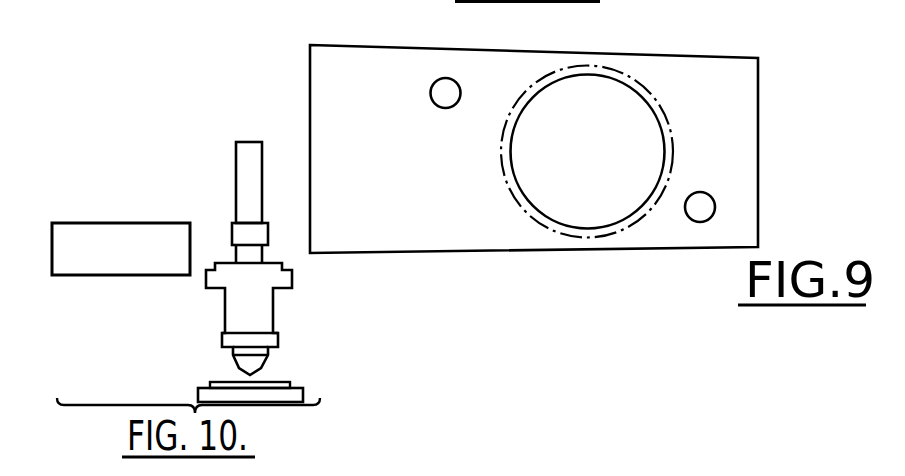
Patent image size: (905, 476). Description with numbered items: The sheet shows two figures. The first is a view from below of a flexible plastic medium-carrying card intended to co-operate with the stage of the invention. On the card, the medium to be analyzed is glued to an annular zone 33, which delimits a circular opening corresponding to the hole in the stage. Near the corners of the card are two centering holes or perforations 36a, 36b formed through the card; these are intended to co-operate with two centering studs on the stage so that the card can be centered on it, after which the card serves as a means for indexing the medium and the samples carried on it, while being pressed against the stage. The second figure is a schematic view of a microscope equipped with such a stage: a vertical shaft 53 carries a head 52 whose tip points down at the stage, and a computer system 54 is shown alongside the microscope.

In FIG. 9, the annular zone 33 is at (612, 72).
In FIG. 9, the centering hole 36a is at (703, 212).
In FIG. 9, the centering hole 36b is at (445, 78).
In FIG. 10, the dispensing head 52 is at (262, 311).
In FIG. 10, the shaft 53 is at (243, 182).
In FIG. 10, the computer system 54 is at (132, 275).